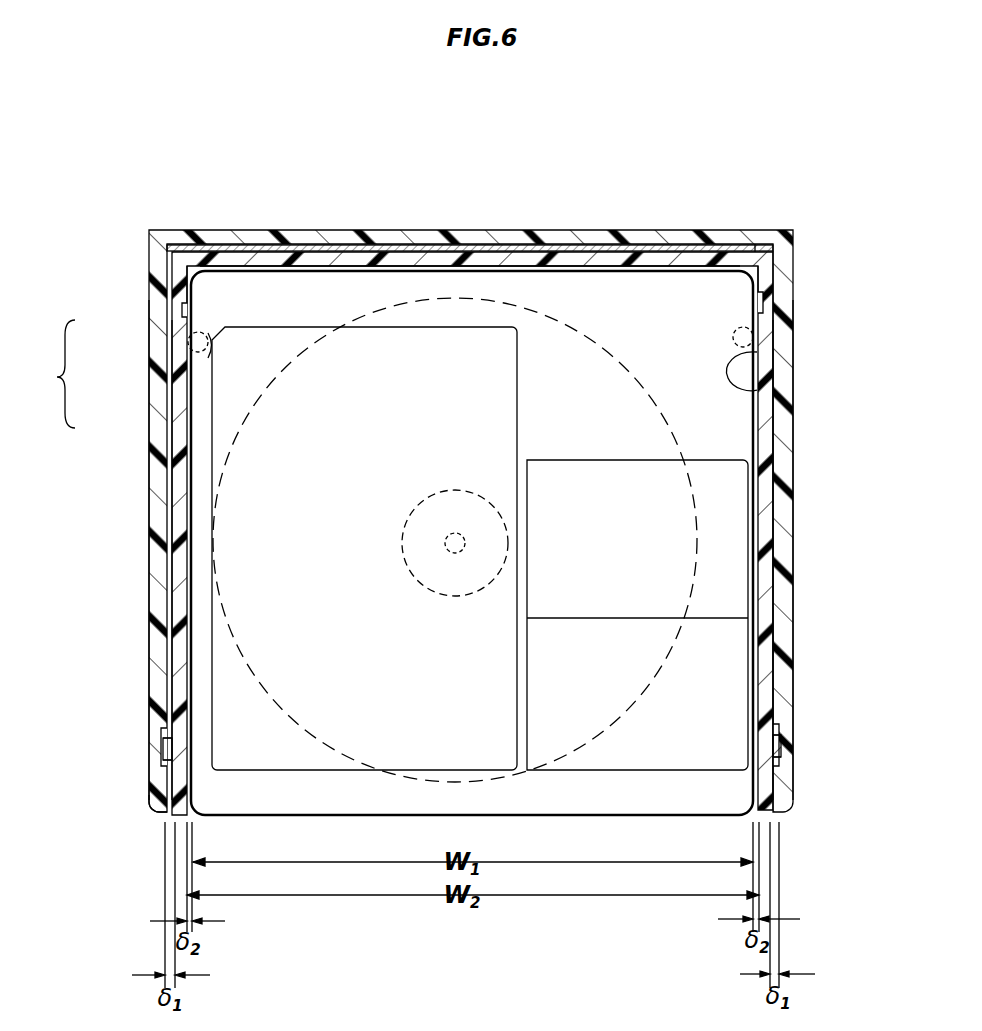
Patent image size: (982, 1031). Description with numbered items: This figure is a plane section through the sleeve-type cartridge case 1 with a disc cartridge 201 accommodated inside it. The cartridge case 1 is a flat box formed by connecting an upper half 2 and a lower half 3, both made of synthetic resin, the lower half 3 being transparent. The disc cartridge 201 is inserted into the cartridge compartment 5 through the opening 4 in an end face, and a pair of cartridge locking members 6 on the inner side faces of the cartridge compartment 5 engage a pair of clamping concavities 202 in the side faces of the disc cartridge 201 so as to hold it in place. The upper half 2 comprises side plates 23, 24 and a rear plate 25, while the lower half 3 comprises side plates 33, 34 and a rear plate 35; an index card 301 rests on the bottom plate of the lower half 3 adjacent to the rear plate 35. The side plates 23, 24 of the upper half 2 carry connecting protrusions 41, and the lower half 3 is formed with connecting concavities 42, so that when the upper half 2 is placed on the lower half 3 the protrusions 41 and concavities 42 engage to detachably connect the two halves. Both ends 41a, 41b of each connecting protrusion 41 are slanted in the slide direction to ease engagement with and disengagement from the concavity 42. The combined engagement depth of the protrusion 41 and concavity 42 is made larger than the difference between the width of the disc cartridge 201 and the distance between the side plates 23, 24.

The cartridge case 1 is at (637, 220).
The upper half 2 is at (475, 492).
The lower half 3 is at (469, 513).
The opening 4 is at (185, 818).
The cartridge compartment 5 is at (193, 278).
The cartridge locking member 6 is at (182, 337).
The side plate 23 is at (180, 470).
The side plate 24 is at (770, 505).
The rear plate 25 is at (517, 262).
The side plate 33 is at (160, 520).
The side plate 34 is at (790, 555).
The rear plate 35 is at (467, 236).
The connecting protrusion 41 is at (172, 748).
The end of connecting protrusion 41a is at (168, 738).
The end of connecting protrusion 41b is at (160, 772).
The connecting concavity 42 is at (163, 712).
The disc cartridge 201 is at (348, 824).
The clamping concavity 202 is at (208, 333).
The index card 301 is at (755, 325).